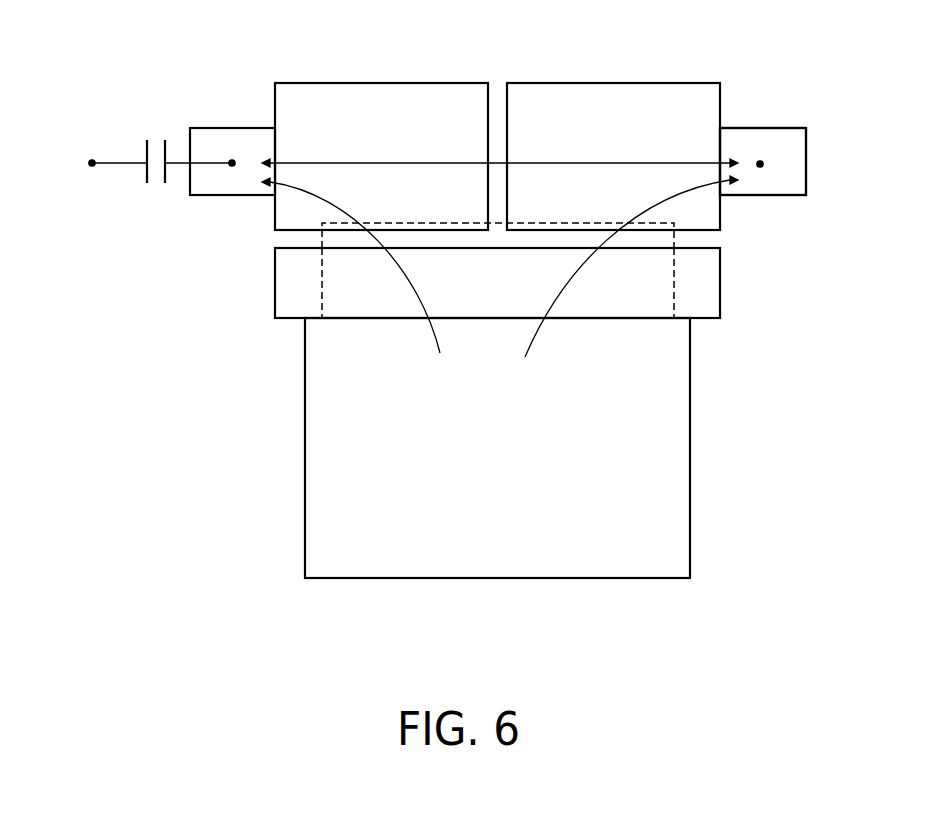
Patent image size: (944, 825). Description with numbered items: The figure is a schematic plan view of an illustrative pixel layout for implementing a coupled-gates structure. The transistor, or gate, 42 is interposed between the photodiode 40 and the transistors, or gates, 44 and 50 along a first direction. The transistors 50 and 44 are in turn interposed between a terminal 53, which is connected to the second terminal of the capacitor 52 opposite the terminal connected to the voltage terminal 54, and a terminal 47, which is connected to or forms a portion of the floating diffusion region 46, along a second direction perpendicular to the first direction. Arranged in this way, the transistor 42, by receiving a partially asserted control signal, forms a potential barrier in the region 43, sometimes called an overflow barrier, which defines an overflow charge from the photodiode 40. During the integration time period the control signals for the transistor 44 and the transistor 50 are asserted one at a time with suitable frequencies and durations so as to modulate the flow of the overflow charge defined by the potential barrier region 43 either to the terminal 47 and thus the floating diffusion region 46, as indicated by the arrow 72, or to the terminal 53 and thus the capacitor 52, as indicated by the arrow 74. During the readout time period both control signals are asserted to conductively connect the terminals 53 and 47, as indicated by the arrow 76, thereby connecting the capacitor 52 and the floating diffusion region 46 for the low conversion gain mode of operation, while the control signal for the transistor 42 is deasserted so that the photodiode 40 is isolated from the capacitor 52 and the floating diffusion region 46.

The photodiode 40 is at (485, 454).
The transistor 42 is at (707, 283).
The potential barrier region 43 is at (320, 270).
The transistor 44 is at (545, 119).
The floating diffusion region 46 is at (790, 113).
The terminal 47 is at (785, 157).
The transistor 50 is at (479, 121).
The capacitor 52 is at (158, 119).
The terminal 53 is at (238, 183).
The voltage terminal 54 is at (93, 168).
The arrow 72 is at (562, 290).
The arrow 74 is at (413, 283).
The arrow 76 is at (372, 162).